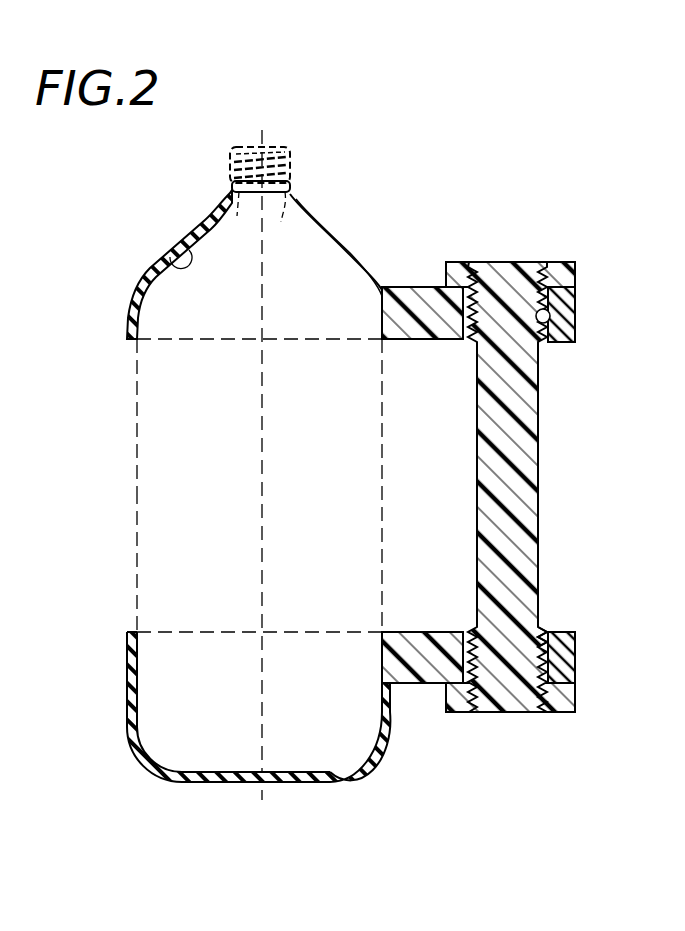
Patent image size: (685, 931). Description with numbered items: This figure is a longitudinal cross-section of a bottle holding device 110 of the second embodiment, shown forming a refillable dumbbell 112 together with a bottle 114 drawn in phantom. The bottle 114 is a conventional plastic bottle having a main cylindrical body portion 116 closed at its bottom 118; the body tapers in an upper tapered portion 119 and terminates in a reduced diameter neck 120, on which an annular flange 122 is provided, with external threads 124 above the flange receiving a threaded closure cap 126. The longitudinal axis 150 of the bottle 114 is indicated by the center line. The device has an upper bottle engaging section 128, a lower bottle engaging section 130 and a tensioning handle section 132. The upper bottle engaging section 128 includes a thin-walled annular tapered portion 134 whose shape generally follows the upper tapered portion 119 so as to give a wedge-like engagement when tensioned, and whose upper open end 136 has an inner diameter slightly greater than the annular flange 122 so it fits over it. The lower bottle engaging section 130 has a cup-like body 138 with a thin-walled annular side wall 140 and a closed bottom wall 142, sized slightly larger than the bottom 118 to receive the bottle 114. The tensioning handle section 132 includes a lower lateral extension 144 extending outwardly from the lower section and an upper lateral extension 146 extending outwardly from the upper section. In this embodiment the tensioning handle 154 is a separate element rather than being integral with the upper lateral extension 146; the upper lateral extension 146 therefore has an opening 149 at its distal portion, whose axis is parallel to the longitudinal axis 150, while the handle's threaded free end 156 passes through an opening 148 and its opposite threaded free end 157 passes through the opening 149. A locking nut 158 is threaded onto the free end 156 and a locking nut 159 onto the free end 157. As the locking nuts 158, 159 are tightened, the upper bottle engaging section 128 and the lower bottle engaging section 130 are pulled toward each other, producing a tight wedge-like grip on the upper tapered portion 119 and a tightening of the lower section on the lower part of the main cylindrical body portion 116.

The bottle holding device 110 is at (496, 162).
The refillable dumbbell 112 is at (76, 194).
The bottle 114 is at (138, 470).
The main cylindrical body portion 116 is at (137, 545).
The bottom 118 is at (215, 770).
The upper tapered portion 119 is at (170, 257).
The reduced diameter neck 120 is at (233, 180).
The annular flange 122 is at (228, 191).
The external threads 124 is at (232, 152).
The threaded closure cap 126 is at (245, 147).
The upper bottle engaging section 128 is at (128, 327).
The lower bottle engaging section 130 is at (128, 688).
The tensioning handle section 132 is at (539, 385).
The annular tapered portion 134 is at (133, 291).
The upper open end 136 is at (292, 212).
The cup-like body 138 is at (128, 652).
The annular side wall 140 is at (127, 729).
The closed bottom wall 142 is at (305, 785).
The lower lateral extension 144 is at (578, 652).
The upper lateral extension 146 is at (578, 302).
The opening 148 is at (528, 630).
The opening 149 is at (551, 317).
The longitudinal axis 150 is at (282, 479).
The tensioning handle 154 is at (527, 440).
The threaded free end 156 is at (512, 712).
The opposite threaded free end 157 is at (487, 262).
The locking nut 158 is at (570, 712).
The locking nut 159 is at (563, 262).